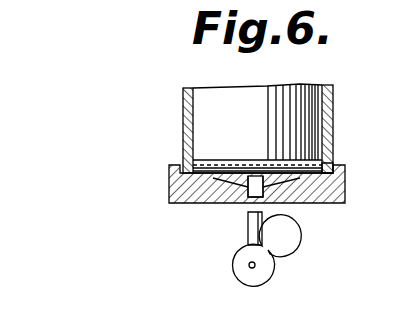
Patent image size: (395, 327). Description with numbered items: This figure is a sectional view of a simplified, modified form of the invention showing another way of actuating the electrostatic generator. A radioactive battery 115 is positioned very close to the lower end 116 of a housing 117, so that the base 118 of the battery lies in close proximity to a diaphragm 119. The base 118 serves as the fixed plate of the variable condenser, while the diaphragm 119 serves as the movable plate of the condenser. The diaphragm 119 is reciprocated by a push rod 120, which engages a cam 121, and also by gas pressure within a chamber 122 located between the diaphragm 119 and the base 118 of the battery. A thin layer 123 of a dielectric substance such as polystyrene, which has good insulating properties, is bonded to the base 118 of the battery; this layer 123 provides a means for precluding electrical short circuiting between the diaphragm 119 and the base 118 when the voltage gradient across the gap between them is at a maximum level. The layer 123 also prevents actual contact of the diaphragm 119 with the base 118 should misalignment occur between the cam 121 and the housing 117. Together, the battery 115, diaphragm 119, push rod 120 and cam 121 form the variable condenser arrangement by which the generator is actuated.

The radioactive battery 115 is at (221, 92).
The lower end 116 is at (336, 164).
The housing 117 is at (342, 93).
The base 118 is at (242, 162).
The diaphragm 119 is at (289, 180).
The push rod 120 is at (248, 222).
The cam 121 is at (262, 270).
The chamber 122 is at (190, 168).
The thin layer 123 is at (213, 162).